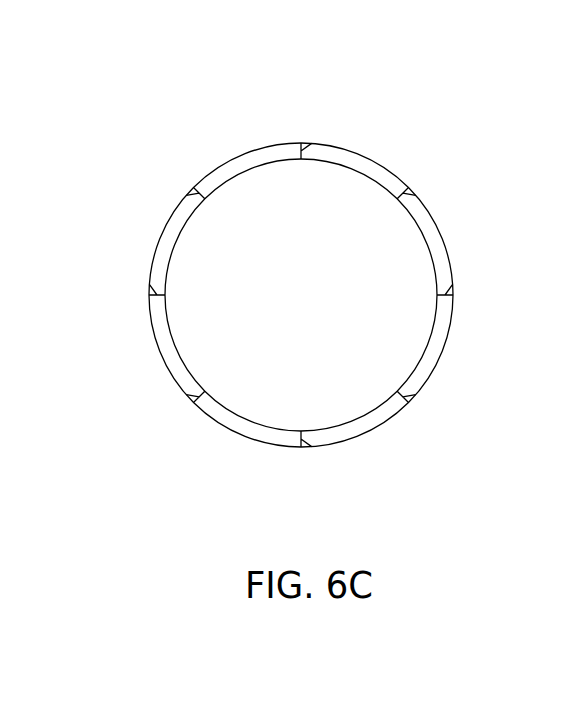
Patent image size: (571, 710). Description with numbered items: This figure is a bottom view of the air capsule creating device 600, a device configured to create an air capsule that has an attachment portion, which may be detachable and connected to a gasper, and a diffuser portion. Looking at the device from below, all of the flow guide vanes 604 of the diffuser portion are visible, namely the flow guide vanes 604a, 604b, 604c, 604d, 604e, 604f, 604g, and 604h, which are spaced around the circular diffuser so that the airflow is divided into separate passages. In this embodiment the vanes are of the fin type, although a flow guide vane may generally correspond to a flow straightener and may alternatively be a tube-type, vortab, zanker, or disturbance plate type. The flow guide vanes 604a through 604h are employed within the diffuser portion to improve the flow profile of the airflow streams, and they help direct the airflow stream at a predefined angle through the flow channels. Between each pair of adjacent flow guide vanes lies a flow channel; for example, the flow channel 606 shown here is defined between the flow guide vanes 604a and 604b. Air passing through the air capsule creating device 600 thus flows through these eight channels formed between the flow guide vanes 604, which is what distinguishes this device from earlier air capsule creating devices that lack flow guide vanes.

The air capsule creating device 600 is at (387, 92).
The flow guide vanes 604 is at (303, 298).
The flow guide vane 604a is at (186, 395).
The flow guide vane 604b is at (312, 447).
The flow guide vane 604c is at (416, 395).
The flow guide vane 604d is at (453, 284).
The flow guide vane 604e is at (416, 195).
The flow guide vane 604f is at (312, 143).
The flow guide vane 604g is at (186, 195).
The flow guide vane 604h is at (149, 284).
The flow channel 606 is at (236, 427).